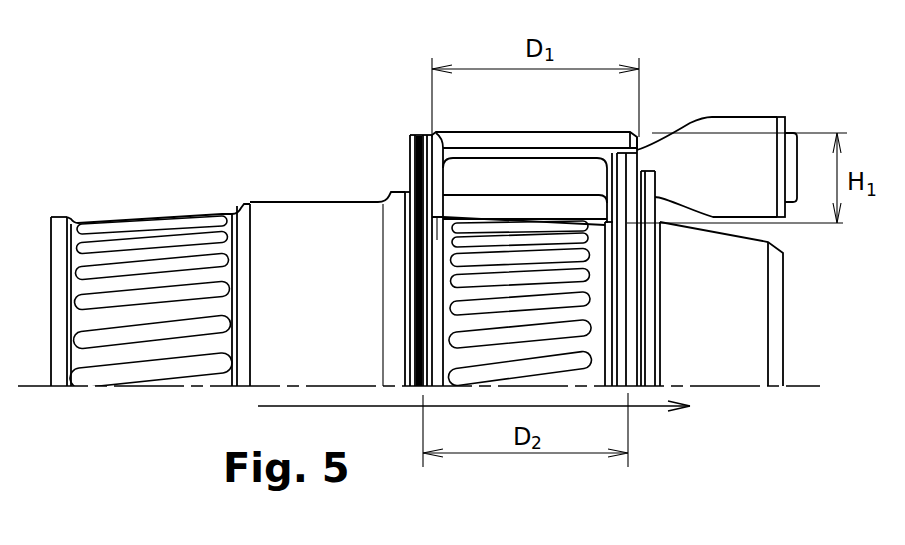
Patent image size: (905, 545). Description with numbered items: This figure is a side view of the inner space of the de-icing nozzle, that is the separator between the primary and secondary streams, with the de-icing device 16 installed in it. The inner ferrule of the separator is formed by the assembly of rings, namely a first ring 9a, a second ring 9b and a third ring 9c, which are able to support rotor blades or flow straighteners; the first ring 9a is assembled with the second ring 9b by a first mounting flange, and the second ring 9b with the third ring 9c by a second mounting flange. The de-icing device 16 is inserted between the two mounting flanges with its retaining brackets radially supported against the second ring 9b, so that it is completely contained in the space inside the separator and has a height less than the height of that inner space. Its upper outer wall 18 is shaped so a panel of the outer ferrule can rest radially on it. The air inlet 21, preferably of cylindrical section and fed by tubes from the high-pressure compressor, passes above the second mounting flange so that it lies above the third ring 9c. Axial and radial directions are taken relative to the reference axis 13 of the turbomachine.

The first ring 9a is at (328, 229).
The second ring 9b is at (488, 353).
The third ring 9c is at (720, 300).
The de-icing device 16 is at (490, 142).
The upper outer wall 18 is at (600, 132).
The air inlet 21 is at (758, 157).
The reference axis 13 is at (648, 409).